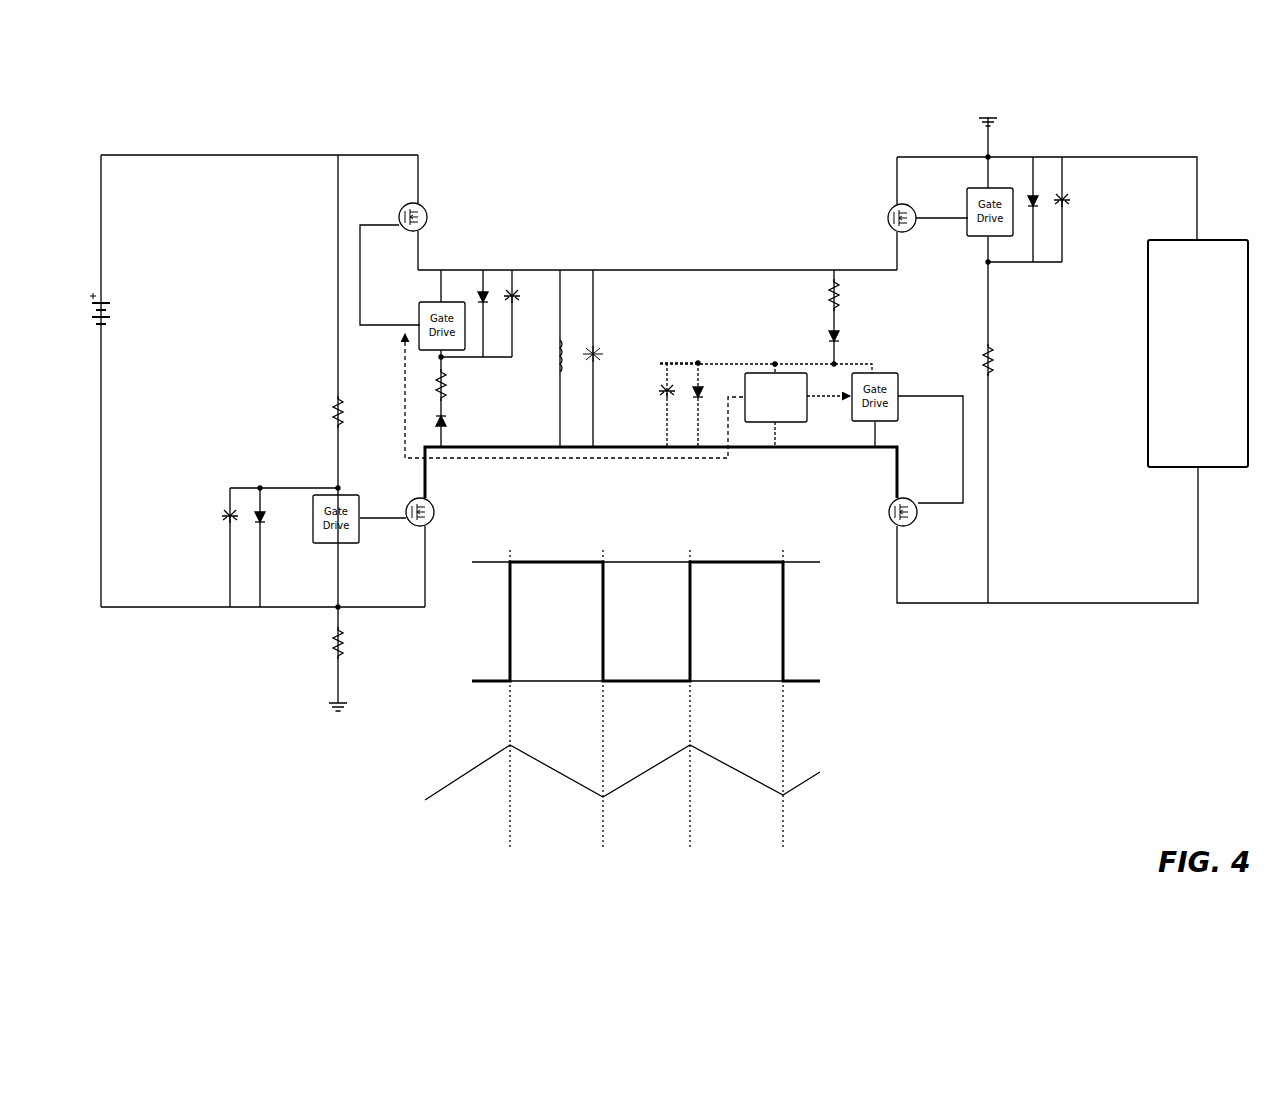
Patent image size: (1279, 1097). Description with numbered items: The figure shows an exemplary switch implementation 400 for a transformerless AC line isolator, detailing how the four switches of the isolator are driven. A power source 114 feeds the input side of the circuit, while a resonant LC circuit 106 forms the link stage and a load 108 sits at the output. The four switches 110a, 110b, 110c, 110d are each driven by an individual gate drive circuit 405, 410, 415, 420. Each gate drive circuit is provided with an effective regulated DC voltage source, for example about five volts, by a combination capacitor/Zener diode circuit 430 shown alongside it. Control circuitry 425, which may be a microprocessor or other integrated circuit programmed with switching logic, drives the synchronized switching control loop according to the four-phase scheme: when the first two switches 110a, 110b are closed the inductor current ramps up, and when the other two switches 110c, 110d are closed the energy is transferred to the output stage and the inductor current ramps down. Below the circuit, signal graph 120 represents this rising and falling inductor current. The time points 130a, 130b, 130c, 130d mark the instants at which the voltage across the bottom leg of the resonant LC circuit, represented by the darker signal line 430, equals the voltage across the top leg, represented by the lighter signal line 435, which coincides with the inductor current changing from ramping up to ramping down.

The switch implementation 400 is at (166, 76).
The power source 114 is at (128, 312).
The switch SW1 110a is at (409, 200).
The switch SW2 110b is at (414, 530).
The switch SW3 110c is at (893, 206).
The switch SW4 110d is at (910, 531).
The gate drive circuit 405 is at (428, 298).
The gate drive circuit 410 is at (325, 490).
The gate drive circuit 415 is at (979, 185).
The gate drive circuit 420 is at (880, 370).
The control circuitry 425 is at (762, 371).
The capacitor/Zener diode circuit 430 is at (489, 294).
The lighter signal line 435 is at (634, 278).
The resonant LC circuit 106 is at (579, 332).
The load 108 is at (1180, 236).
The signal graph 120 is at (478, 758).
The time point 130a is at (522, 737).
The time point 130b is at (617, 737).
The time point 130c is at (703, 737).
The time point 130d is at (796, 735).